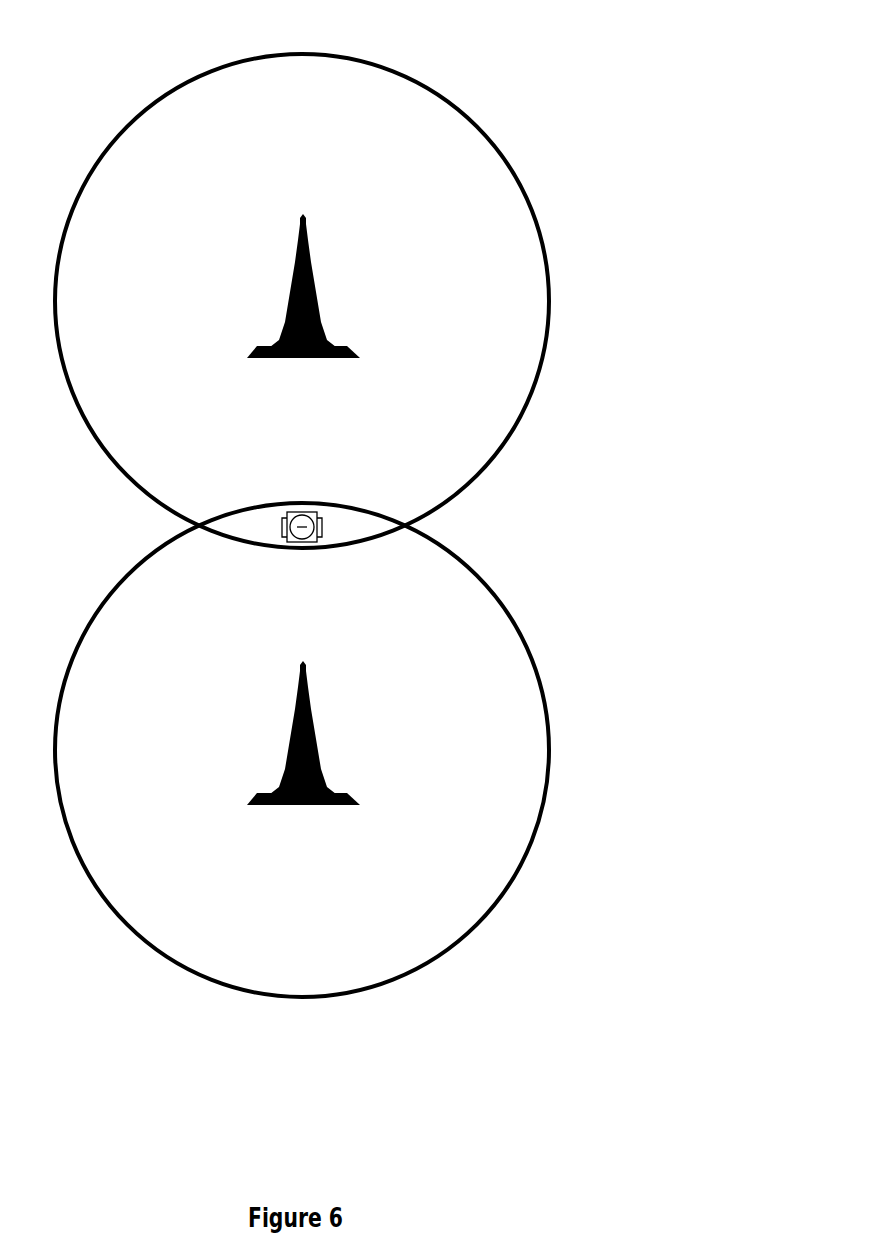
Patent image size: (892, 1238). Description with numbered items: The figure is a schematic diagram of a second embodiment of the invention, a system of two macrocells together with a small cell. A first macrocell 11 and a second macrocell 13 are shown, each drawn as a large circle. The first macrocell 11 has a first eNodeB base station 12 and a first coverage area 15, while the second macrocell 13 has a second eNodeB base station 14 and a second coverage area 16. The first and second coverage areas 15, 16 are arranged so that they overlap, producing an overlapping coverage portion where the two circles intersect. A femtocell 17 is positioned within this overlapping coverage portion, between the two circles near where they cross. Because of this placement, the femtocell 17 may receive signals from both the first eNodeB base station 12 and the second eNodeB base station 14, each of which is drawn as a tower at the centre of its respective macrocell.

The first macrocell 11 is at (326, 275).
The first eNodeB base station 12 is at (295, 260).
The second macrocell 13 is at (338, 750).
The second eNodeB base station 14 is at (360, 803).
The first coverage area 15 is at (538, 212).
The second coverage area 16 is at (550, 695).
The femtocell 17 is at (278, 525).